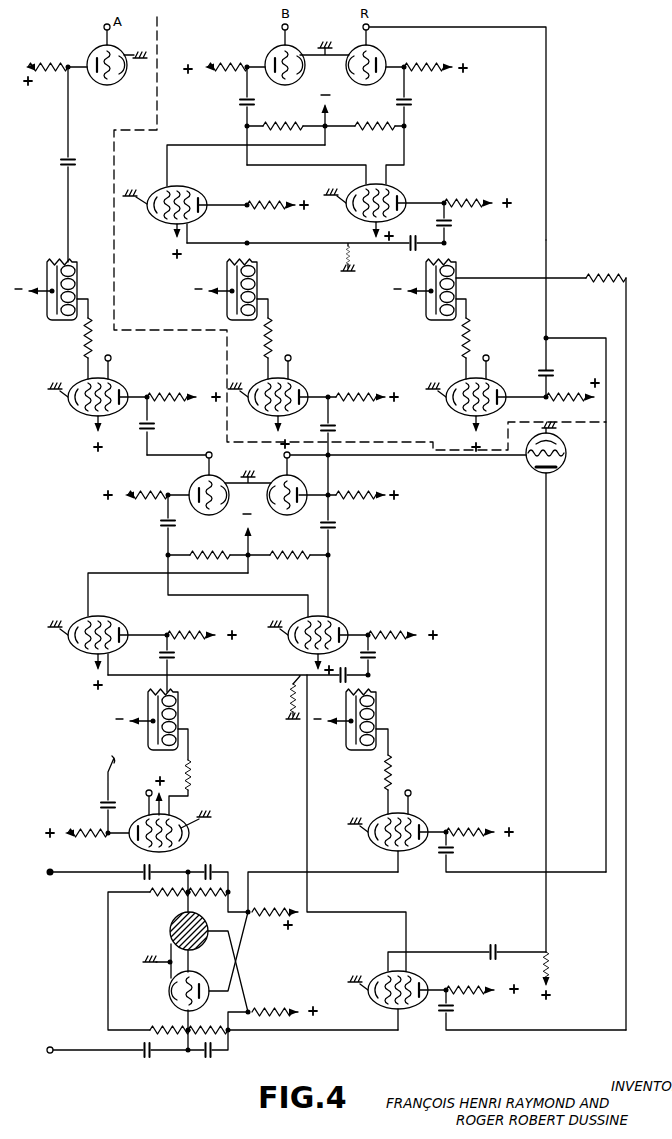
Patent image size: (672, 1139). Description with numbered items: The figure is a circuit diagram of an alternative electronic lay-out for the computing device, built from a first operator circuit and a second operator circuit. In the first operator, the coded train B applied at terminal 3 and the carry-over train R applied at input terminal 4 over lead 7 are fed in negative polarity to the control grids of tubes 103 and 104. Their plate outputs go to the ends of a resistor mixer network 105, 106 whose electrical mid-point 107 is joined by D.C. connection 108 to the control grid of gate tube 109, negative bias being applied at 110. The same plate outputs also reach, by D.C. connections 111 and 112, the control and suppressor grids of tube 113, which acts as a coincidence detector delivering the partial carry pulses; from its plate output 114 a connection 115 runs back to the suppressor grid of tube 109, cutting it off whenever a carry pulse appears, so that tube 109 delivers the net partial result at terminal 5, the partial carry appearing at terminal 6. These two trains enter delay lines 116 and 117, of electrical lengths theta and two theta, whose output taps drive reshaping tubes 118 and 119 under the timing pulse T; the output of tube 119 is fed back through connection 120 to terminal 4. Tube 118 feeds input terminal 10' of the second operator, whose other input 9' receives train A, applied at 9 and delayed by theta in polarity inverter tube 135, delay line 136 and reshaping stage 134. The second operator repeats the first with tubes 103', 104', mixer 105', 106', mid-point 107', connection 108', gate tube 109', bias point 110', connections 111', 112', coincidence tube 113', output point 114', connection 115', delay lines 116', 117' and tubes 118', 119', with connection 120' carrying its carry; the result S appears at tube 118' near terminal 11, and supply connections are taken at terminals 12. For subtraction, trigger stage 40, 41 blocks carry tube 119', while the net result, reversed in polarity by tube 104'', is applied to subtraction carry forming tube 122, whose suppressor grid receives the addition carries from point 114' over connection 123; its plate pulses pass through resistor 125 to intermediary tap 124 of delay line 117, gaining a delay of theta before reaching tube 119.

The input terminal 3 is at (288, 27).
The input terminal 4 is at (363, 27).
The output terminal 5 is at (334, 426).
The partial carry terminal 6 is at (544, 408).
The connecting lead 7 is at (545, 128).
The input terminal for train A 9 is at (97, 33).
The input terminal of second operator 9' is at (188, 457).
The input terminal of second operator 10' is at (391, 457).
The switch terminal 11 is at (103, 779).
The output terminals 12 is at (553, 1030).
The control trigger stage tube 40 is at (169, 991).
The control trigger stage tube 41 is at (169, 931).
The tube 103 is at (266, 61).
The tube 104 is at (406, 61).
The tube 104' is at (332, 492).
The polarity reversal tube 104'' is at (533, 453).
The tube 103' is at (187, 491).
The mixer resistor 105 is at (286, 118).
The mixer resistor 106 is at (364, 116).
The electrical mid-point 107 is at (339, 136).
The D.C. connection 108 is at (246, 156).
The gate tube 109 is at (215, 214).
The negative bias point 110 is at (326, 97).
The D.C. connection 111 is at (306, 167).
The D.C. connection 112 is at (411, 155).
The coincidence detector tube 113 is at (417, 207).
The plate output 114 is at (459, 228).
The connection 115 is at (315, 249).
The delay line 116 is at (235, 289).
The delay line 117 is at (438, 289).
The pulse reshaping tube 118 is at (313, 373).
The pulse reshaping tube 119 is at (512, 375).
The feedback connection 120 is at (558, 310).
The feedback connection 120' is at (575, 596).
The subtraction carry forming tube 122 is at (420, 977).
The connection 123 is at (374, 911).
The intermediary tap 124 is at (457, 268).
The resistor 125 is at (606, 643).
The reshaping stage 134 is at (117, 384).
The polarity inverter tube 135 is at (119, 84).
The delay line 136 is at (76, 263).
The mixer resistor 105' is at (208, 546).
The mixer resistor 106' is at (288, 546).
The electrical mid-point 107' is at (262, 563).
The D.C. connection 108' is at (168, 586).
The gate tube 109' is at (142, 643).
The negative bias point 110' is at (262, 534).
The D.C. connection 111' is at (238, 586).
The D.C. connection 112' is at (343, 586).
The coincidence detector tube 113' is at (352, 638).
The terminal 114' is at (384, 656).
The connection 115' is at (238, 688).
The delay line 116' is at (147, 719).
The delay line 117' is at (345, 723).
The pulse reshaping tube 118' is at (133, 790).
The carry output tube 119' is at (430, 802).